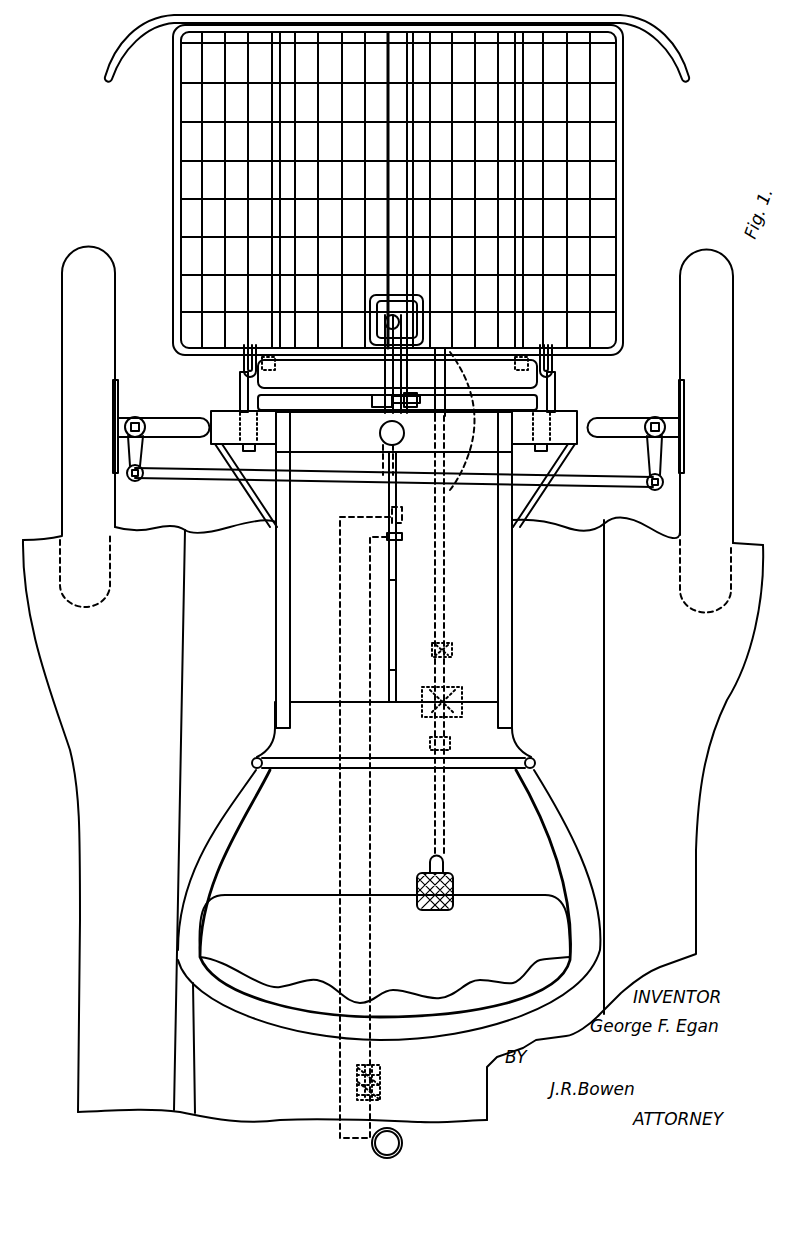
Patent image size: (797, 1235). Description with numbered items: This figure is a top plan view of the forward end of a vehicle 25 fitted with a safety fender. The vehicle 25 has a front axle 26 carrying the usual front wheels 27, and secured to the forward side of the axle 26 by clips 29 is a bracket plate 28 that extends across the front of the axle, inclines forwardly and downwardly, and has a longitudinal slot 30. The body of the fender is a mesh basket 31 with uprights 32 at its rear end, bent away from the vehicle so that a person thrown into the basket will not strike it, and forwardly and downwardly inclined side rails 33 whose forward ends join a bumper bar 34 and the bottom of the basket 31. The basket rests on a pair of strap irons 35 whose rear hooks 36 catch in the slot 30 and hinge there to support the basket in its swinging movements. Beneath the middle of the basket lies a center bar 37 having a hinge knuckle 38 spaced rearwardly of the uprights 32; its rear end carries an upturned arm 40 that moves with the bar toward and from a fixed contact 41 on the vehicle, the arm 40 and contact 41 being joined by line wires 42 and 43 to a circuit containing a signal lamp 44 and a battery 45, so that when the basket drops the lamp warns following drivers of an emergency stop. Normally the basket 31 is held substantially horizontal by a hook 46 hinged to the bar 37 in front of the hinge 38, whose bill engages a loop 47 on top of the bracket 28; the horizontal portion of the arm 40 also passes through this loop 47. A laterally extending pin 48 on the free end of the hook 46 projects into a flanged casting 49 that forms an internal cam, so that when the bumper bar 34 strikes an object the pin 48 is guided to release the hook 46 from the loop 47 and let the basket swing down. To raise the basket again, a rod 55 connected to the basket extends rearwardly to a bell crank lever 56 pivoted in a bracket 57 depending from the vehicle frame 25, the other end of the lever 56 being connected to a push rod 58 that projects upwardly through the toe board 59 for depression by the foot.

The vehicle 25 is at (393, 820).
The front axle 26 is at (590, 423).
The front wheels 27 is at (68, 340).
The bracket plate 28 is at (240, 390).
The clips 29 is at (557, 448).
The longitudinal slot 30 is at (267, 382).
The basket 31 is at (190, 182).
The uprights 32 is at (447, 360).
The side rails 33 is at (175, 247).
The bumper bar 34 is at (133, 37).
The strap irons 35 is at (263, 143).
The hooks 36 is at (270, 363).
The center bar 37 is at (395, 188).
The hinge knuckle 38 is at (387, 382).
The upturned arm 40 is at (392, 512).
The fixed contact 41 is at (400, 537).
The line wire 42 is at (340, 602).
The line wire 43 is at (370, 642).
The signal lamp 44 is at (398, 1140).
The battery 45 is at (380, 1080).
The hook 46 is at (388, 412).
The loop 47 is at (415, 407).
The pin 48 is at (385, 405).
The flanged casting 49 is at (377, 403).
The rod 55 is at (462, 421).
The bell crank lever 56 is at (450, 670).
The bracket 57 is at (457, 697).
The push rod 58 is at (440, 867).
The toe board 59 is at (531, 843).